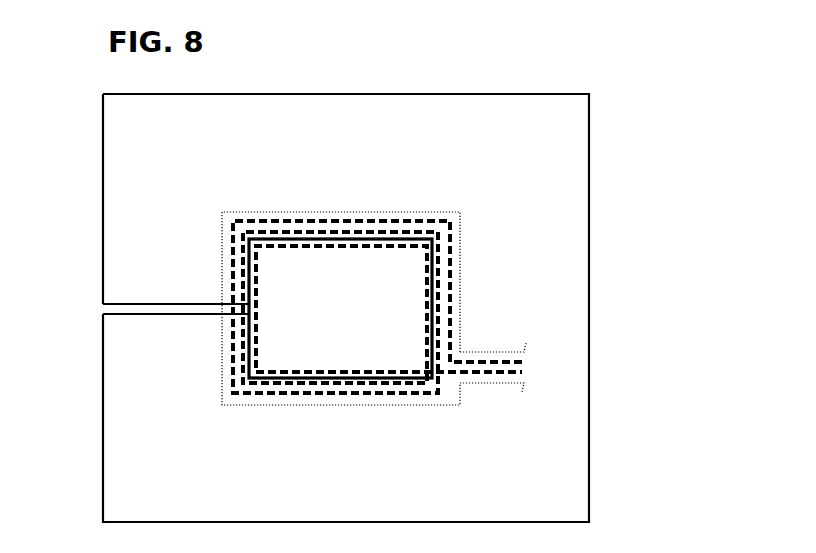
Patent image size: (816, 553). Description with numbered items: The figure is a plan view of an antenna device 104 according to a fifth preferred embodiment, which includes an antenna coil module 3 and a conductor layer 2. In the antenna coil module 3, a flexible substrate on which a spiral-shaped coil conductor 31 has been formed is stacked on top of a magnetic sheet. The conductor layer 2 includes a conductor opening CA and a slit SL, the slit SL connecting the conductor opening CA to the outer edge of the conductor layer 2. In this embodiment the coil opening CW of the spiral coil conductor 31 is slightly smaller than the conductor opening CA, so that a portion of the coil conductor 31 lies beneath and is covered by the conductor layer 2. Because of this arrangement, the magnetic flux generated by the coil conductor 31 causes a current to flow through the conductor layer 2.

The antenna device 104 is at (628, 75).
The conductor layer 2 is at (459, 112).
The antenna coil module 3 is at (462, 211).
The coil conductor 31 is at (345, 242).
The conductor opening CA is at (436, 280).
The coil opening CW is at (303, 293).
The slit SL is at (101, 305).